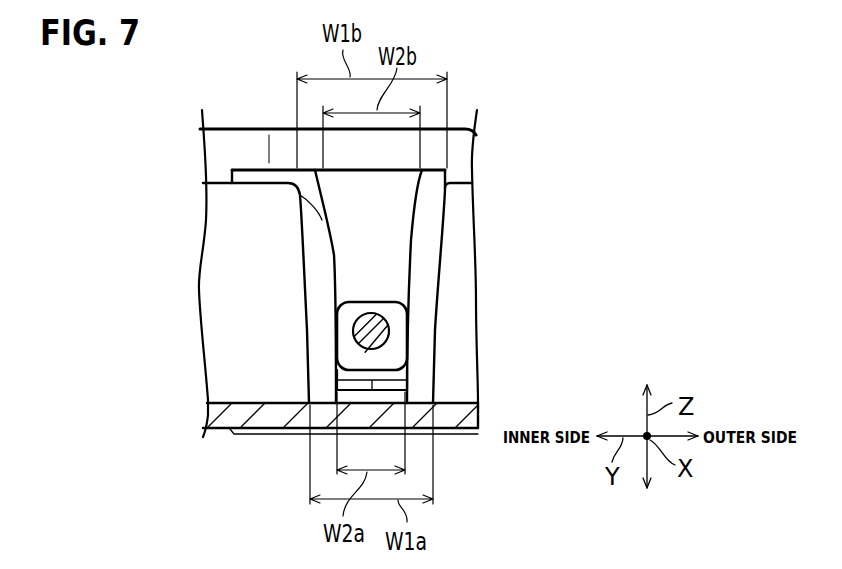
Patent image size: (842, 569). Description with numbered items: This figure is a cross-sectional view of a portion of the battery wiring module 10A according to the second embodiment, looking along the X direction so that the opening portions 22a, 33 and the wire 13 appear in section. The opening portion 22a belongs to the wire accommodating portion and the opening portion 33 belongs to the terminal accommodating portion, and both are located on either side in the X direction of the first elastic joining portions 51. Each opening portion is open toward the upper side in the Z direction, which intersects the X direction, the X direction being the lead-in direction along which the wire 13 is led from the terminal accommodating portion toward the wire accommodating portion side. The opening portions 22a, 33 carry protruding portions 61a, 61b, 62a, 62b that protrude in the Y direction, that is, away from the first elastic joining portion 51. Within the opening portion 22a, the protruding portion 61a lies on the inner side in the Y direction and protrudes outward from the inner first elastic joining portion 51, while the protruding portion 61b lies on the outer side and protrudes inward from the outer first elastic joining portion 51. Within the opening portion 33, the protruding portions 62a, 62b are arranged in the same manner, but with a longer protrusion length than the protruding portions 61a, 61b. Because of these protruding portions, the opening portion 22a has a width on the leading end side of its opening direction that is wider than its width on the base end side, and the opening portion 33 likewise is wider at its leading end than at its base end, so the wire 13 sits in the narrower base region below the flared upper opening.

The battery wiring module 10A is at (547, 84).
The first elastic joining portion 51 is at (237, 175).
The opening portion 33 is at (468, 286).
The protruding portion 62a is at (306, 256).
The protruding portion 62b is at (400, 277).
The opening portion 22a is at (317, 282).
The protruding portion 61a is at (317, 308).
The protruding portion 61b is at (423, 317).
The wire 13 is at (386, 323).